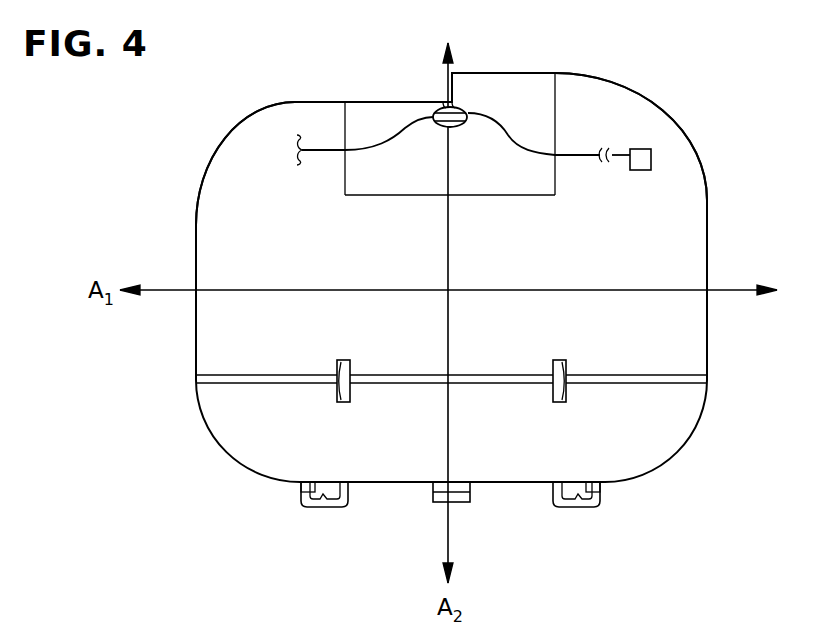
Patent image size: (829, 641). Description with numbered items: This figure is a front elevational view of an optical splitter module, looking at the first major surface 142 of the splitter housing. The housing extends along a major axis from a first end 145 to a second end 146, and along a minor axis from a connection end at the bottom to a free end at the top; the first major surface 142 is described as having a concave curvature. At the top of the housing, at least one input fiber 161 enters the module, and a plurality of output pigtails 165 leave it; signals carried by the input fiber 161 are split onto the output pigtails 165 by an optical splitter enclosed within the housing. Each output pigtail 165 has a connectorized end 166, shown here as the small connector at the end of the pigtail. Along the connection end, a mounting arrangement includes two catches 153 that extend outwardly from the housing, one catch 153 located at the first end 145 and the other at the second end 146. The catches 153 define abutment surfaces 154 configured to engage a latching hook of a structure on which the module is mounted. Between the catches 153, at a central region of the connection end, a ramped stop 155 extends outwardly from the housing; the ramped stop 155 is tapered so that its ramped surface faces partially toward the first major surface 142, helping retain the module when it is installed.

The first major surface 142 is at (541, 338).
The first end 145 is at (196, 317).
The second end 146 is at (707, 257).
The catches 153 is at (310, 507).
The abutment surfaces 154 is at (300, 490).
The ramped stop 155 is at (432, 497).
The input fiber 161 is at (452, 88).
The output pigtails 165 is at (367, 148).
The connectorized end 166 is at (647, 152).